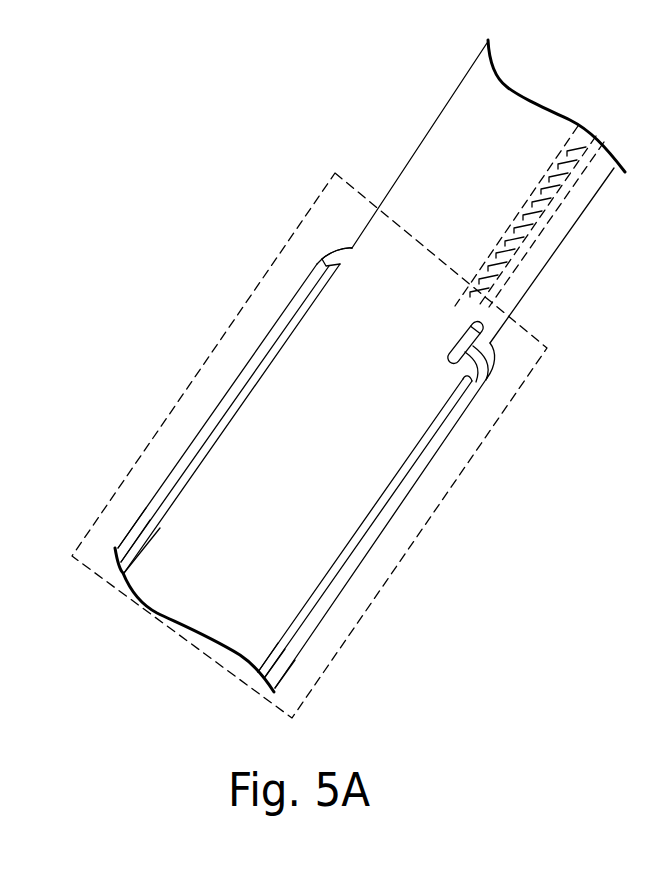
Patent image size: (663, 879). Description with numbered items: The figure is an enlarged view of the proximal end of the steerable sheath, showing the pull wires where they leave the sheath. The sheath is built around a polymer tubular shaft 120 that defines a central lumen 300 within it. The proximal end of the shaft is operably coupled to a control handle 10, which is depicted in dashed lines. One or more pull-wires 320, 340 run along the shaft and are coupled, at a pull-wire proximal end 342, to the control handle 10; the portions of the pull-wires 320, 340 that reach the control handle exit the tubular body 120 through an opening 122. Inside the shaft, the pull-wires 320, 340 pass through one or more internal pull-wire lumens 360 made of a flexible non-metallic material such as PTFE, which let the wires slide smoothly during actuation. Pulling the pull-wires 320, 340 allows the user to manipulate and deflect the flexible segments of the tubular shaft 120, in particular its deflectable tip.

The control handle 10 is at (463, 466).
The tubular shaft 120 is at (418, 152).
The opening 122 is at (352, 247).
The central lumen 300 is at (510, 117).
The pull-wire 320 is at (586, 136).
The pull-wire 340 is at (190, 447).
The pull-wire proximal end 342 is at (115, 556).
The internal pull-wire lumen 360 is at (572, 206).